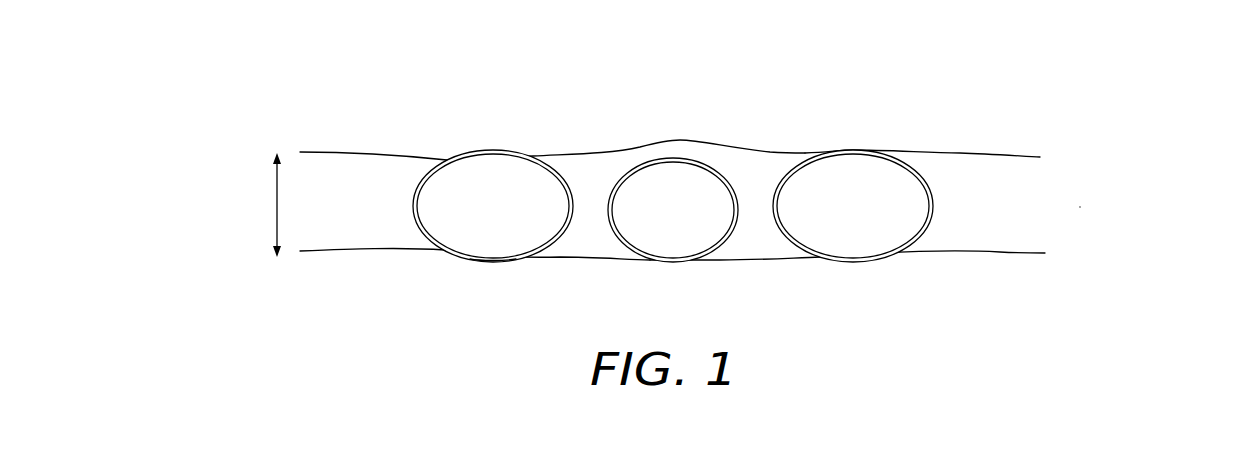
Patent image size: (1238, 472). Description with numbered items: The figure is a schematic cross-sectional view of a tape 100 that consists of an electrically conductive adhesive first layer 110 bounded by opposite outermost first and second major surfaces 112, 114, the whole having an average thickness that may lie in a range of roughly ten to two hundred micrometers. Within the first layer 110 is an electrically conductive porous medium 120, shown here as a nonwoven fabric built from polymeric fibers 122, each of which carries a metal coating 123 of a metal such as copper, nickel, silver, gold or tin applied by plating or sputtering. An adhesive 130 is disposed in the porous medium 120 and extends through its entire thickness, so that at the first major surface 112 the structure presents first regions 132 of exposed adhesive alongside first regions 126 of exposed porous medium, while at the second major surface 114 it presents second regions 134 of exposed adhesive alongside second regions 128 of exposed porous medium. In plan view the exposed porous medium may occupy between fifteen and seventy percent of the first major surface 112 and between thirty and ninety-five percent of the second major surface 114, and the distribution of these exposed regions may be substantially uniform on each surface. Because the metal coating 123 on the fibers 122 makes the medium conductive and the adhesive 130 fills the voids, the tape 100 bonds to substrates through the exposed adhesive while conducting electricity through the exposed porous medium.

The tape 100 is at (247, 85).
The electrically conductive adhesive first layer 110 is at (1088, 207).
The first major surface 112 is at (952, 152).
The second major surface 114 is at (953, 257).
The electrically conductive porous medium 120 is at (404, 205).
The polymeric fibers 122 is at (503, 180).
The metal coating 123 is at (628, 170).
The first regions of exposed porous medium 126 is at (862, 152).
The second regions of exposed porous medium 128 is at (493, 261).
The adhesive 130 is at (588, 240).
The first regions of exposed adhesive 132 is at (738, 145).
The second regions of exposed adhesive 134 is at (777, 258).